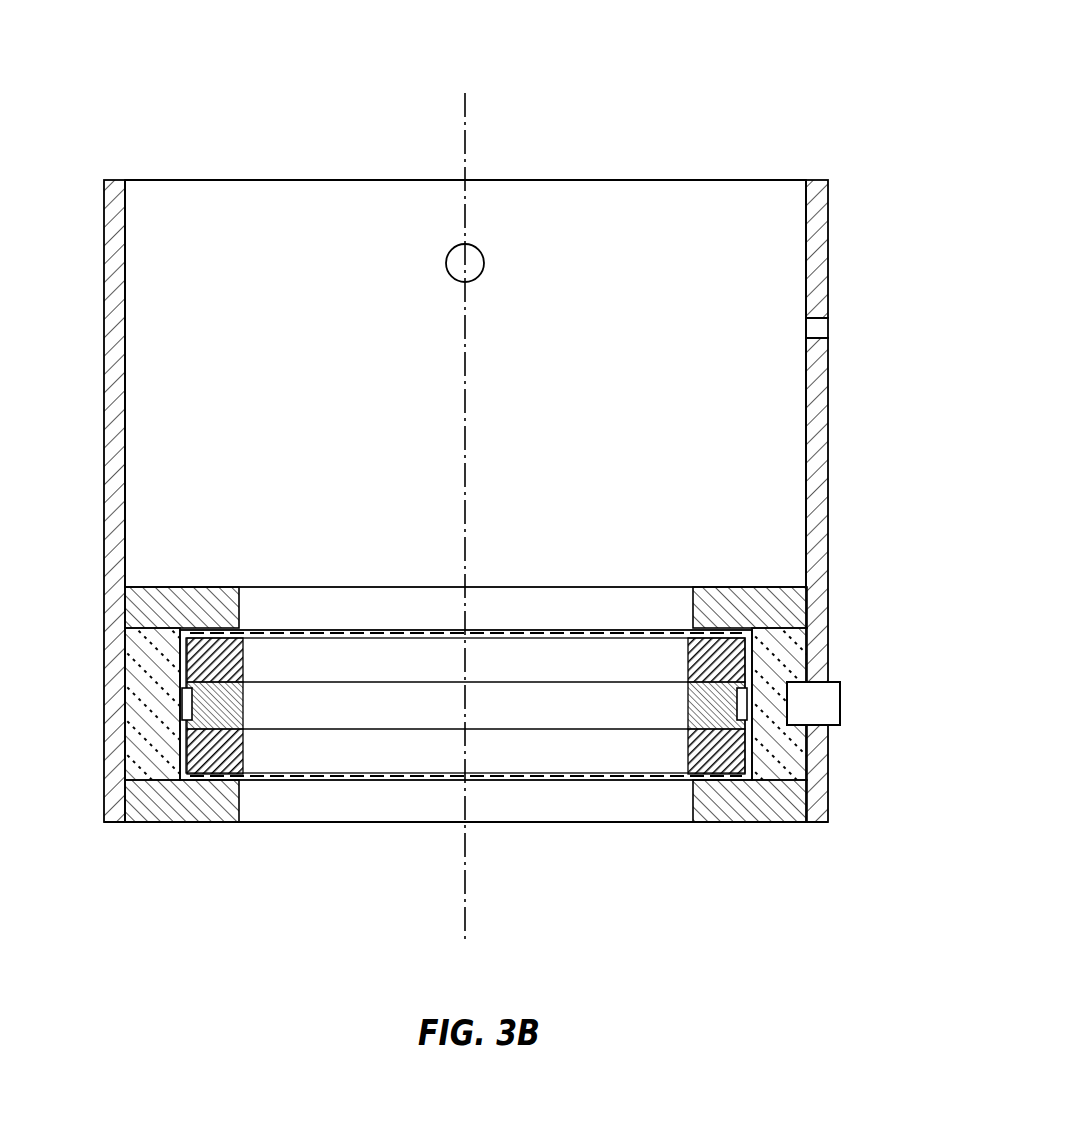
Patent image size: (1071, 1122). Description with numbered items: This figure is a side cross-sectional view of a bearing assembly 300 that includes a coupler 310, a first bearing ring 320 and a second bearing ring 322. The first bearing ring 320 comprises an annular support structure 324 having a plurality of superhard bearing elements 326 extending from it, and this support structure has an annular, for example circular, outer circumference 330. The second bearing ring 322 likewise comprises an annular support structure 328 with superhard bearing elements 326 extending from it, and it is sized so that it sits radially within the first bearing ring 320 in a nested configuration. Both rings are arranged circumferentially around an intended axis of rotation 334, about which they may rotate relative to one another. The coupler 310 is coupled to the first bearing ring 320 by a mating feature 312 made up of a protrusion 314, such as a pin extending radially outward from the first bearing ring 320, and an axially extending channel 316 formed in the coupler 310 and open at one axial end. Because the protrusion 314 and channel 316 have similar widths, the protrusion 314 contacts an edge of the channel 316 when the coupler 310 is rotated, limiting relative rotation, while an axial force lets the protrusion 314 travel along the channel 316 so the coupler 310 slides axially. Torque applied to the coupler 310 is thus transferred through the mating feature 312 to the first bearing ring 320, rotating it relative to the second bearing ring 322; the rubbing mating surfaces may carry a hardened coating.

The bearing assembly 300 is at (814, 90).
The coupler 310 is at (637, 213).
The mating feature 312 is at (847, 666).
The protrusion 314 is at (825, 704).
The axially extending channel 316 is at (829, 393).
The first bearing ring 320 is at (708, 830).
The second bearing ring 322 is at (511, 786).
The annular support structure 324 is at (760, 805).
The superhard bearing elements 326 is at (382, 782).
The annular support structure 328 is at (178, 757).
The outer circumference 330 is at (820, 742).
The axis of rotation 334 is at (466, 108).